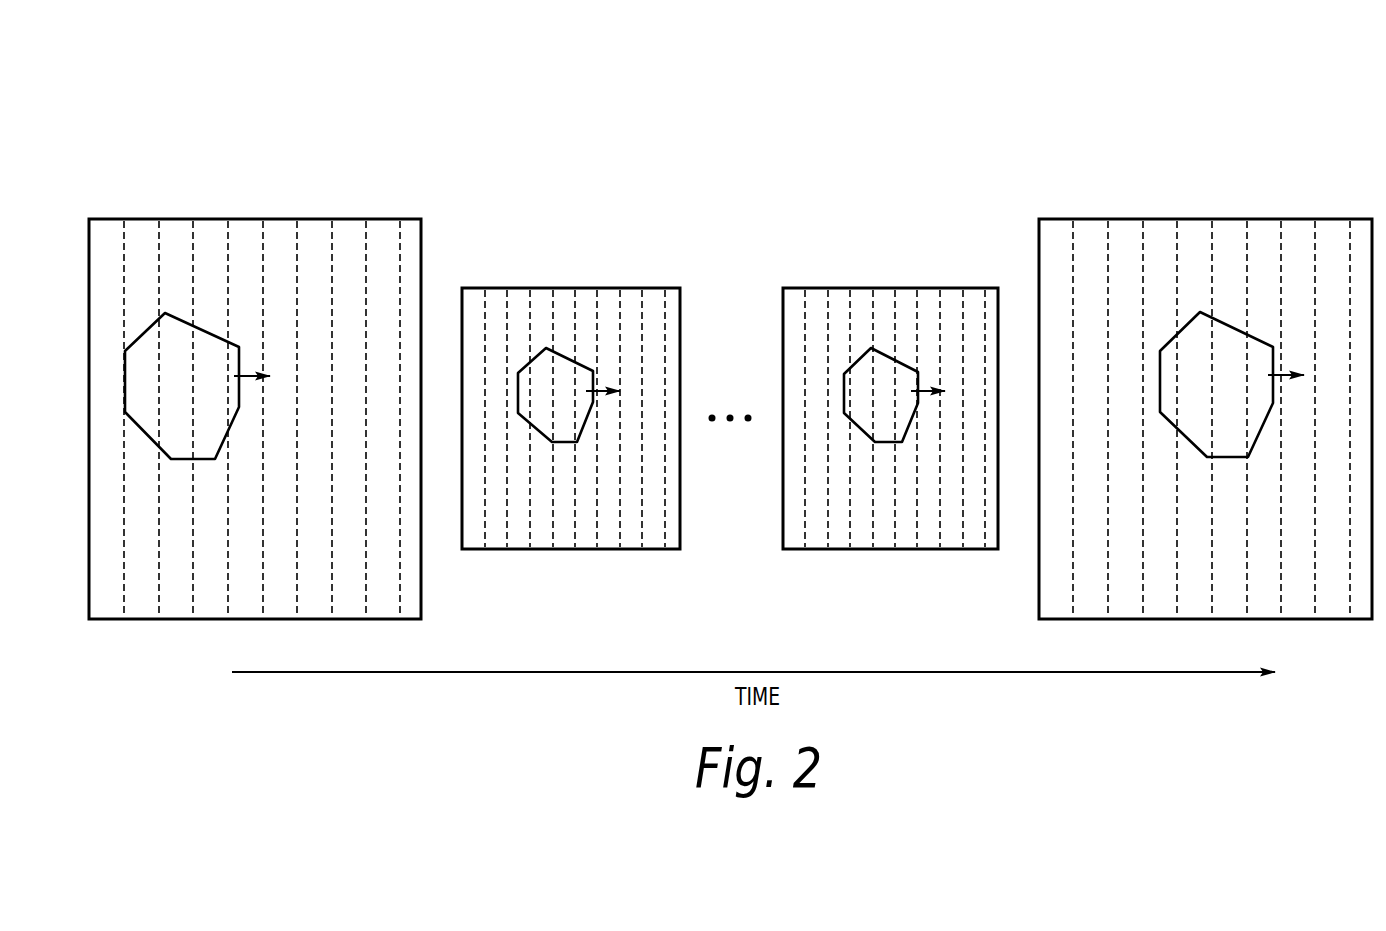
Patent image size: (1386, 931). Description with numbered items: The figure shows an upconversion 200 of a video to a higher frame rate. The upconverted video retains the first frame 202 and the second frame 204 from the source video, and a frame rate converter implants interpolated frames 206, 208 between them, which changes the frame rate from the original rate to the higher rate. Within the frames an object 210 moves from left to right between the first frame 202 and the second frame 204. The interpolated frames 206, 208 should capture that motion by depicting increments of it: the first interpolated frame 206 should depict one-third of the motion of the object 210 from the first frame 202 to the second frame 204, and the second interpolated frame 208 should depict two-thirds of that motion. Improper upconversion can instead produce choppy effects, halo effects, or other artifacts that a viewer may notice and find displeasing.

The sequence of video frames 200 is at (311, 77).
The first frame 202 is at (277, 219).
The second frame 204 is at (1227, 219).
The first interpolated frame 206 is at (563, 288).
The second interpolated frame 208 is at (885, 288).
The object 210 is at (182, 427).